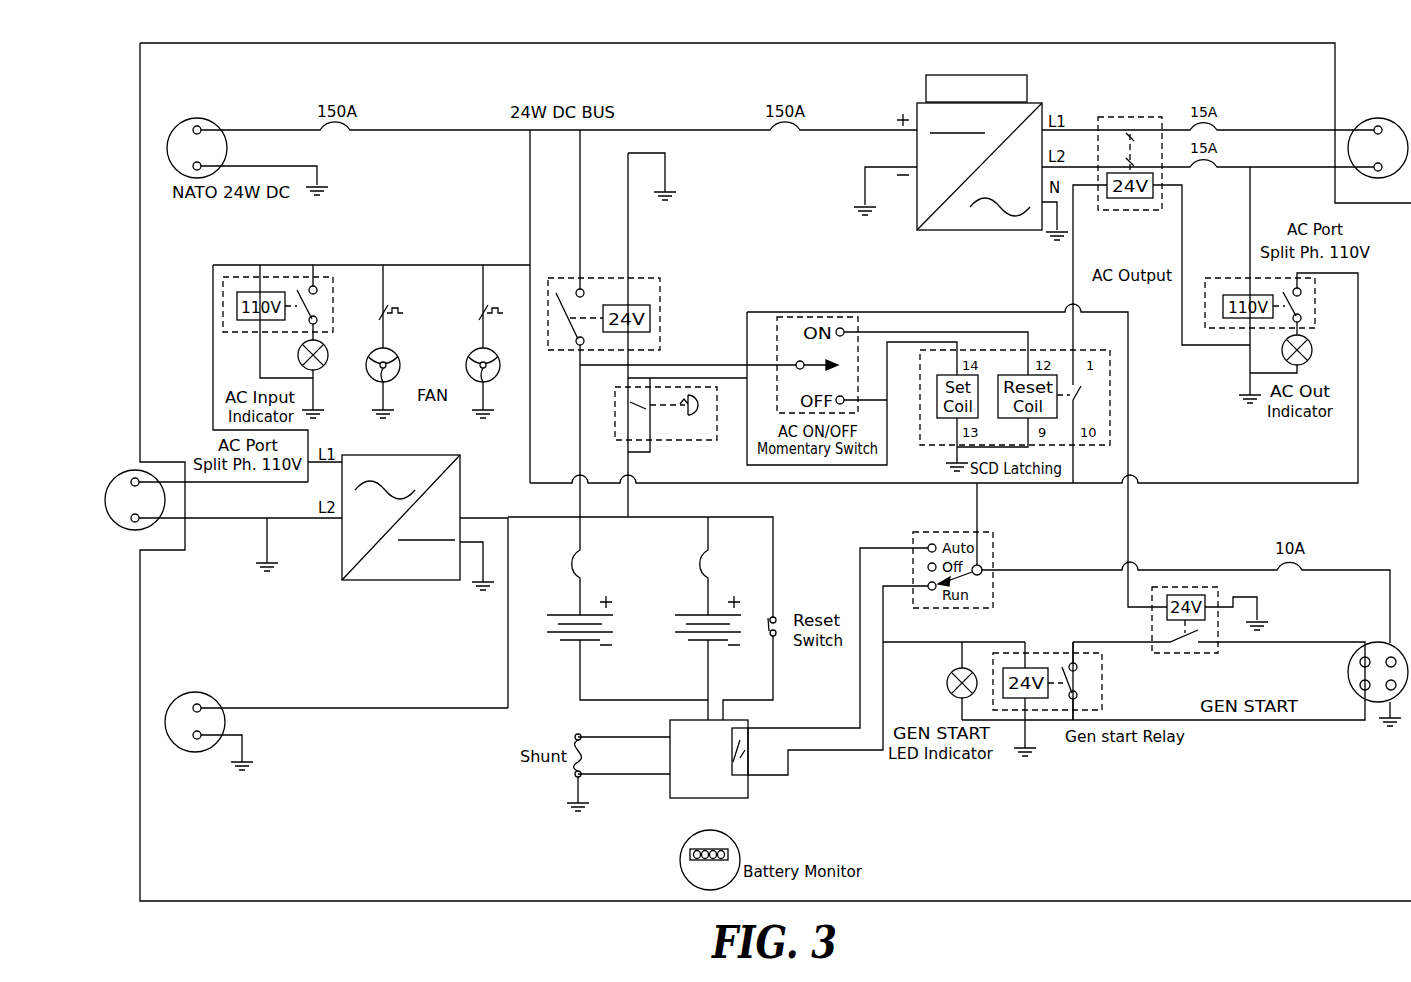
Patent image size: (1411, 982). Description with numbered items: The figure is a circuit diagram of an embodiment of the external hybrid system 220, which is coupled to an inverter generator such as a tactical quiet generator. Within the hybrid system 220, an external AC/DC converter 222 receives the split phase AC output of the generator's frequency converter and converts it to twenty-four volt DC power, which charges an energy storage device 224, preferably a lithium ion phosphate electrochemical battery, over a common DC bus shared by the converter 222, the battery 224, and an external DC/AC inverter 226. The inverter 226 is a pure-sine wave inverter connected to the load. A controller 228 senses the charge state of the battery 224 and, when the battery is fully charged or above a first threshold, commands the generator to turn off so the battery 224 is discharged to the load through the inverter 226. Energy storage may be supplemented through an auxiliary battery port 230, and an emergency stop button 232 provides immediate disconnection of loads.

The external hybrid system 220 is at (297, 887).
The external AC/DC converter 222 is at (348, 580).
The energy storage device 224 is at (545, 690).
The external DC/AC inverter 226 is at (1040, 102).
The controller 228 is at (680, 800).
The auxiliary battery port 230 is at (195, 755).
The emergency stop button 232 is at (668, 440).